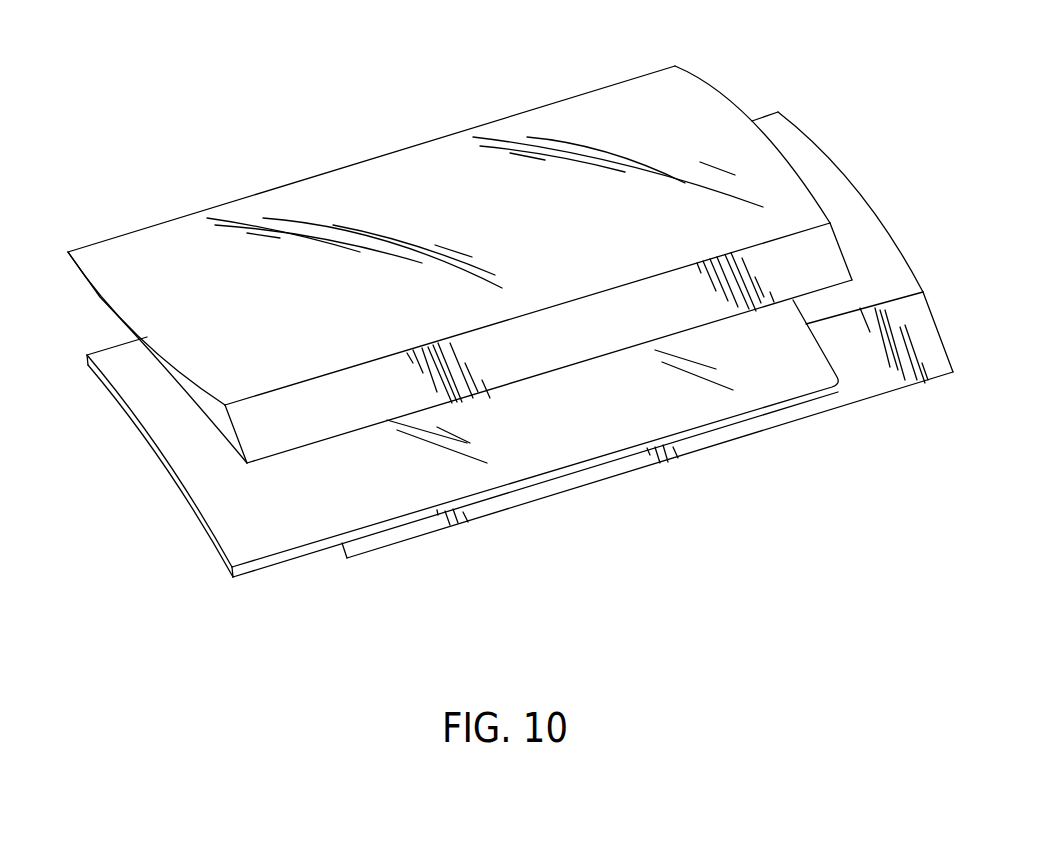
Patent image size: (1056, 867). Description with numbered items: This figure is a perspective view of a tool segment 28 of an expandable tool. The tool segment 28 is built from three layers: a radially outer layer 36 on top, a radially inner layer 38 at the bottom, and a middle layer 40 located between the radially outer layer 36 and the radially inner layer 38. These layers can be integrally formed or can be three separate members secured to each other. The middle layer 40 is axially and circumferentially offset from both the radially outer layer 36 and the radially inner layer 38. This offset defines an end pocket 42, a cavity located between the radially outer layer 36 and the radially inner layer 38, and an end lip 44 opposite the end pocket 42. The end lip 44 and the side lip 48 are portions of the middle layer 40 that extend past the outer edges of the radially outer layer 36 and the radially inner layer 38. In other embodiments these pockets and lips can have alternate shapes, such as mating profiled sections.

The tool segment 28 is at (300, 93).
The radially outer layer 36 is at (178, 240).
The radially inner layer 38 is at (252, 540).
The middle layer 40 is at (922, 332).
The end pocket 42 is at (825, 307).
The end lip 44 is at (150, 404).
The side lip 48 is at (683, 402).